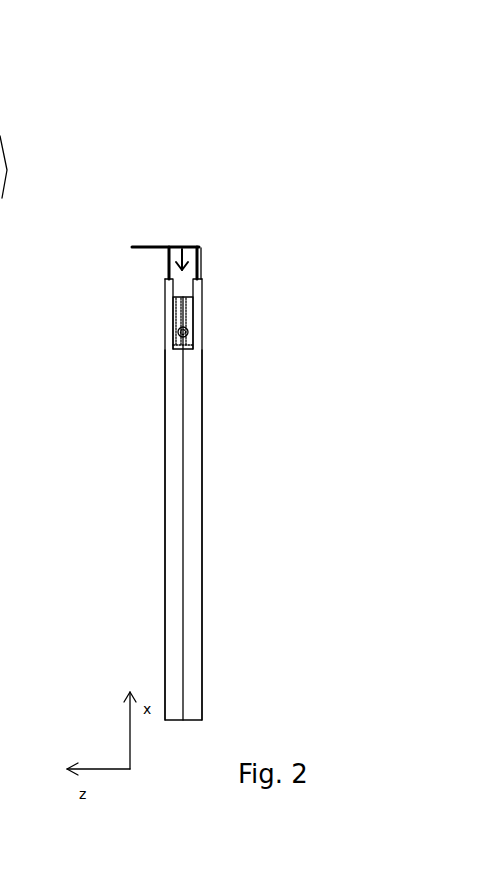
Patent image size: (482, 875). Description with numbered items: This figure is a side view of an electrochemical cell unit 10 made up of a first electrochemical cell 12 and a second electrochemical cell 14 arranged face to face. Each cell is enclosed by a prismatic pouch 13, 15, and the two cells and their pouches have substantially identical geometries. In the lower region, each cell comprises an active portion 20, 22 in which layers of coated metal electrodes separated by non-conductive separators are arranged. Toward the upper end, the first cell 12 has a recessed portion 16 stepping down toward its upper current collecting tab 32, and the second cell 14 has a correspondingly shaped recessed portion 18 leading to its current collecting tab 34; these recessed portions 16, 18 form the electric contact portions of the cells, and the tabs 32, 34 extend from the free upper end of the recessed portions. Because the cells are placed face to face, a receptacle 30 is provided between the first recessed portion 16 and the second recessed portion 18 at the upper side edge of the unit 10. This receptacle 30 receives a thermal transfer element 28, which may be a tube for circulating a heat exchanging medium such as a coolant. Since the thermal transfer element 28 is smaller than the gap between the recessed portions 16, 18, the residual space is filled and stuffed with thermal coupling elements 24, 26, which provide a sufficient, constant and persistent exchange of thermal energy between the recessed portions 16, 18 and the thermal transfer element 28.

The electrochemical cell unit 10 is at (202, 152).
The first electrochemical cell 12 is at (80, 485).
The prismatic pouch 13 is at (165, 576).
The second electrochemical cell 14 is at (223, 420).
The prismatic pouch 15 is at (203, 565).
The recessed portion 16 is at (170, 308).
The recessed portion 18 is at (198, 292).
The active portion 20 is at (175, 643).
The active portion 22 is at (190, 607).
The thermal coupling element 24 is at (175, 315).
The thermal coupling element 26 is at (190, 310).
The thermal transfer element 28 is at (190, 330).
The receptacle 30 is at (178, 247).
The current collecting tab 32 is at (143, 245).
The current collecting tab 34 is at (190, 246).